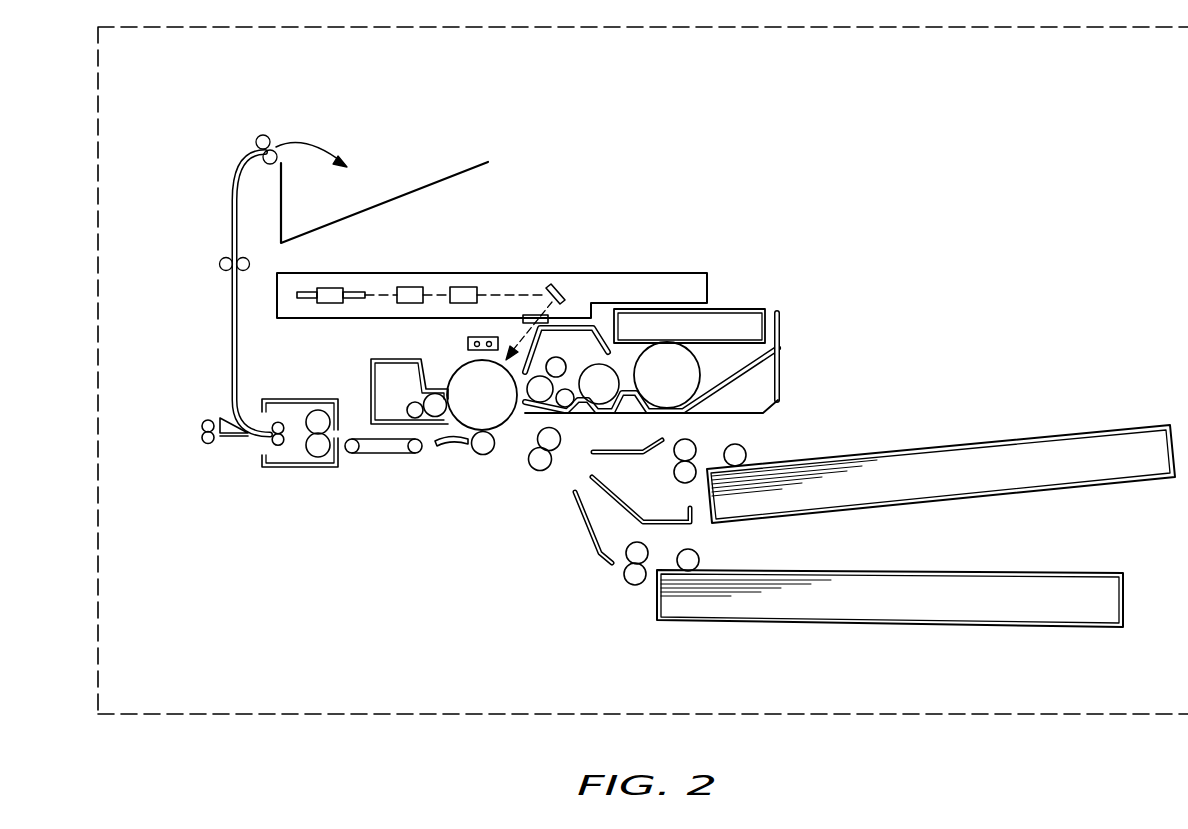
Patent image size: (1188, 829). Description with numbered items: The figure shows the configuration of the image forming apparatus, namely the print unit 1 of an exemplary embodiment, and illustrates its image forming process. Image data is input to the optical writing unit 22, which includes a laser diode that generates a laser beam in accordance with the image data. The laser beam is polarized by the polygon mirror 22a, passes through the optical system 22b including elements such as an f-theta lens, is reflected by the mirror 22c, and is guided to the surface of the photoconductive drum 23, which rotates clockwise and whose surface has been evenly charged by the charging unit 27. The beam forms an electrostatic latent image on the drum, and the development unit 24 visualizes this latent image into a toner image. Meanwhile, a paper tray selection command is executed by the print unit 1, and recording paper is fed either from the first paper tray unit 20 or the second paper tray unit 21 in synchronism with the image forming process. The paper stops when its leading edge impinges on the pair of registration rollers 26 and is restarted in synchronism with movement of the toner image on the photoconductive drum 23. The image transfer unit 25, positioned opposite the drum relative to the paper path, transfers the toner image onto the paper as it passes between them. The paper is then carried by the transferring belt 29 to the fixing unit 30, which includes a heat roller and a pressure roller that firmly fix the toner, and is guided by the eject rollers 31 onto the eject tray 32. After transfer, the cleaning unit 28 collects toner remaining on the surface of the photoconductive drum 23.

The print unit 1 is at (98, 574).
The first paper tray unit 20 is at (985, 447).
The second paper tray unit 21 is at (1012, 577).
The optical writing unit 22 is at (492, 275).
The polygon mirror 22a is at (343, 287).
The optical system 22b is at (420, 287).
The mirror 22c is at (558, 286).
The photoconductive drum 23 is at (493, 407).
The development unit 24 is at (750, 308).
The image transfer unit 25 is at (481, 454).
The registration rollers 26 is at (542, 471).
The charging unit 27 is at (468, 341).
The cleaning unit 28 is at (372, 372).
The transferring belt 29 is at (385, 455).
The fixing unit 30 is at (292, 466).
The eject rollers 31 is at (264, 134).
The eject tray 32 is at (450, 170).